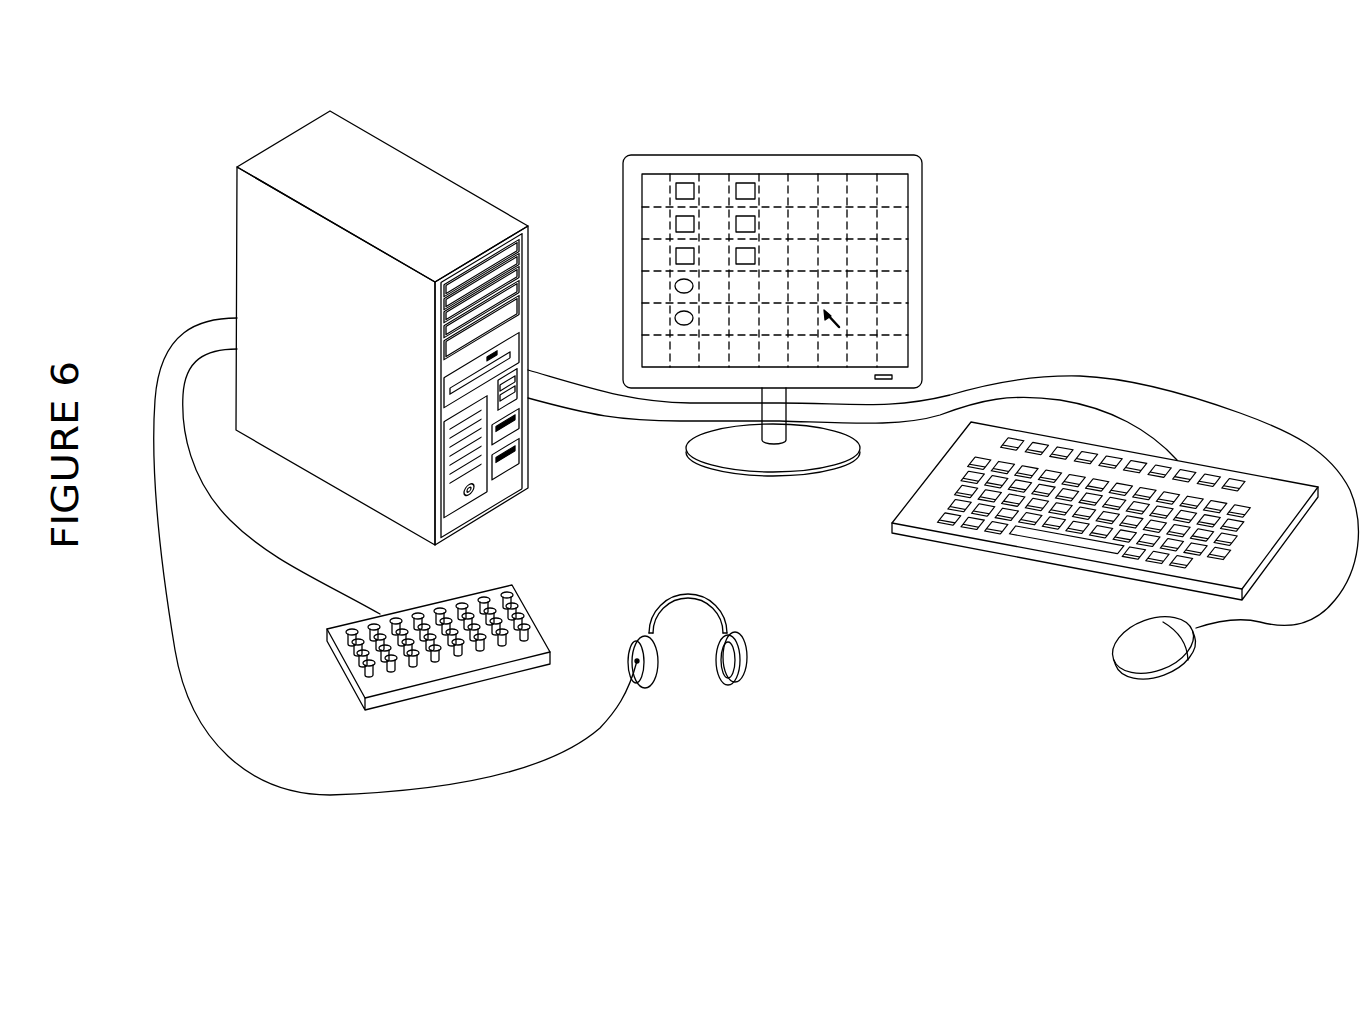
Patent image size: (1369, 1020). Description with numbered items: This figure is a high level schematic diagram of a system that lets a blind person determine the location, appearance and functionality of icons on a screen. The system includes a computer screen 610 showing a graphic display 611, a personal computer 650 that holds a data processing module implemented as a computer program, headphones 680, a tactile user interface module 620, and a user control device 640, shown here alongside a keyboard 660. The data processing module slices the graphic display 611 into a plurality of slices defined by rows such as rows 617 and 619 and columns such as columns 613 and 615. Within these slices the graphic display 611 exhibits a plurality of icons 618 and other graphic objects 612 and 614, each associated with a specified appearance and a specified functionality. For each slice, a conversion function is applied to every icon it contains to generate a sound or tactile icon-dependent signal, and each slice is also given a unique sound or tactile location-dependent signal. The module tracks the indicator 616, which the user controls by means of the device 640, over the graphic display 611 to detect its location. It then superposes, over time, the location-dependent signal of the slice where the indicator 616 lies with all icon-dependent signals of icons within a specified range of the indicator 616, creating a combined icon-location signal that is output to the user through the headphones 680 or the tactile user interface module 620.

The computer screen 610 is at (773, 279).
The graphic display 611 is at (773, 225).
The graphic object 612 is at (683, 183).
The column 613 is at (837, 184).
The graphic object 614 is at (740, 183).
The column 615 is at (808, 184).
The indicator 616 is at (843, 314).
The row 617 is at (650, 207).
The icons 618 is at (675, 318).
The row 619 is at (650, 239).
The tactile user interface module 620 is at (346, 667).
The user control device 640 is at (1165, 675).
The personal computer 650 is at (430, 169).
The keyboard 660 is at (973, 552).
The headphones 680 is at (715, 607).